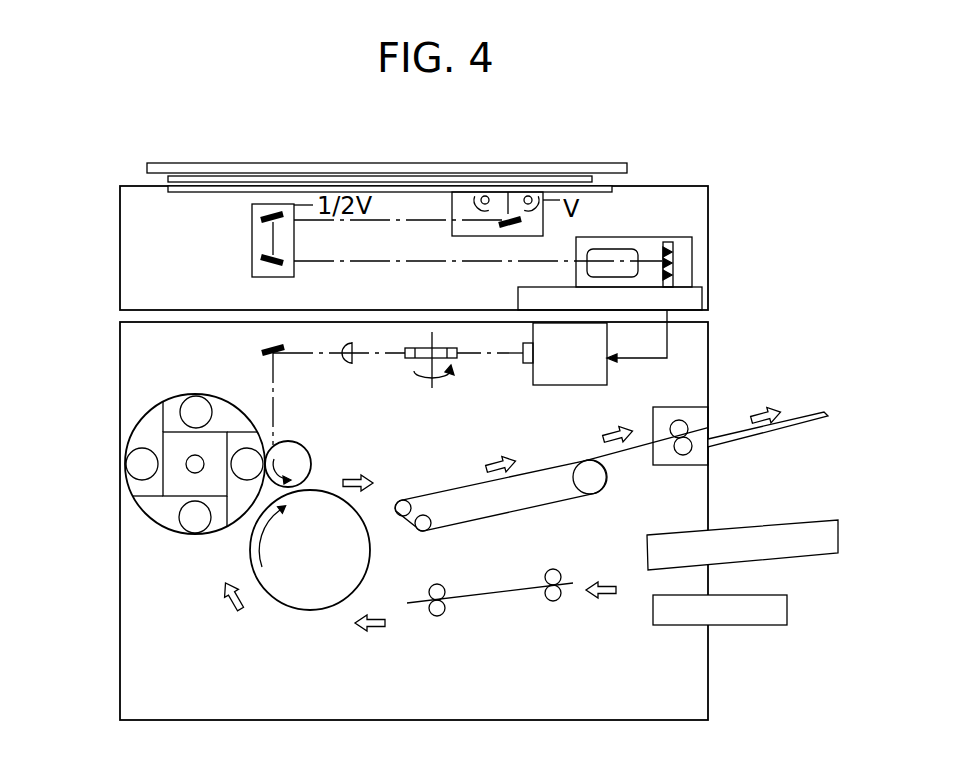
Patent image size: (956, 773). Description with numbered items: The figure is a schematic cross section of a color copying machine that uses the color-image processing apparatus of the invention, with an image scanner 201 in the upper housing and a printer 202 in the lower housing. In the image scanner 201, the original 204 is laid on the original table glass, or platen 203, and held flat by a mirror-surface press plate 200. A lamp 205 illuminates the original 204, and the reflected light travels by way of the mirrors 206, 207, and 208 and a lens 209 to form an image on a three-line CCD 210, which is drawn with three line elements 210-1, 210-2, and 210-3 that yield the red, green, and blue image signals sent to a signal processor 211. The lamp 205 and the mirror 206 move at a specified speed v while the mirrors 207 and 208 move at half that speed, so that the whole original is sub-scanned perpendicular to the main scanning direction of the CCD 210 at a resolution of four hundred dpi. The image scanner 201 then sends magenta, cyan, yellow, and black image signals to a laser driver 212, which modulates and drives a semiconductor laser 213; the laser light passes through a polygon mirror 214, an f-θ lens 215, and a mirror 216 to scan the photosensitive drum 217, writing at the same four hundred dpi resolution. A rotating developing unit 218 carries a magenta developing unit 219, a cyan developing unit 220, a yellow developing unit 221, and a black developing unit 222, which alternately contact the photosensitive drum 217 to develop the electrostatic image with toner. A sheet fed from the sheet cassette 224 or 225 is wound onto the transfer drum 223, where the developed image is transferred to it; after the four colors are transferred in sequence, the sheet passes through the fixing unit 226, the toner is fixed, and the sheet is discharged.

The mirror-surface press plate 200 is at (318, 163).
The image scanner 201 is at (119, 259).
The printer 202 is at (114, 411).
The original table glass (platen) 203 is at (612, 194).
The original 204 is at (569, 177).
The lamp 205 is at (528, 196).
The mirror 206 is at (512, 232).
The mirror 207 is at (262, 220).
The mirror 208 is at (263, 263).
The lens 209 is at (605, 249).
The three-line solid imaging device (CCD) 210 is at (735, 248).
The first lens element 210-1 is at (673, 252).
The second lens element 210-2 is at (673, 263).
The third lens element 210-3 is at (673, 276).
The signal processor 211 is at (697, 307).
The laser driver 212 is at (538, 385).
The semiconductor laser 213 is at (528, 365).
The polygon mirror 214 is at (438, 348).
The f-θ lens 215 is at (353, 360).
The mirror 216 is at (267, 347).
The photosensitive drum 217 is at (307, 452).
The rotating developing unit 218 is at (195, 465).
The magenta developing unit 219 is at (258, 452).
The cyan developing unit 220 is at (181, 531).
The yellow developing unit 221 is at (130, 478).
The black developing unit 222 is at (182, 405).
The transfer drum 223 is at (302, 610).
The sheet cassette 224 is at (735, 627).
The sheet cassette 225 is at (767, 560).
The fixing unit 226 is at (688, 467).